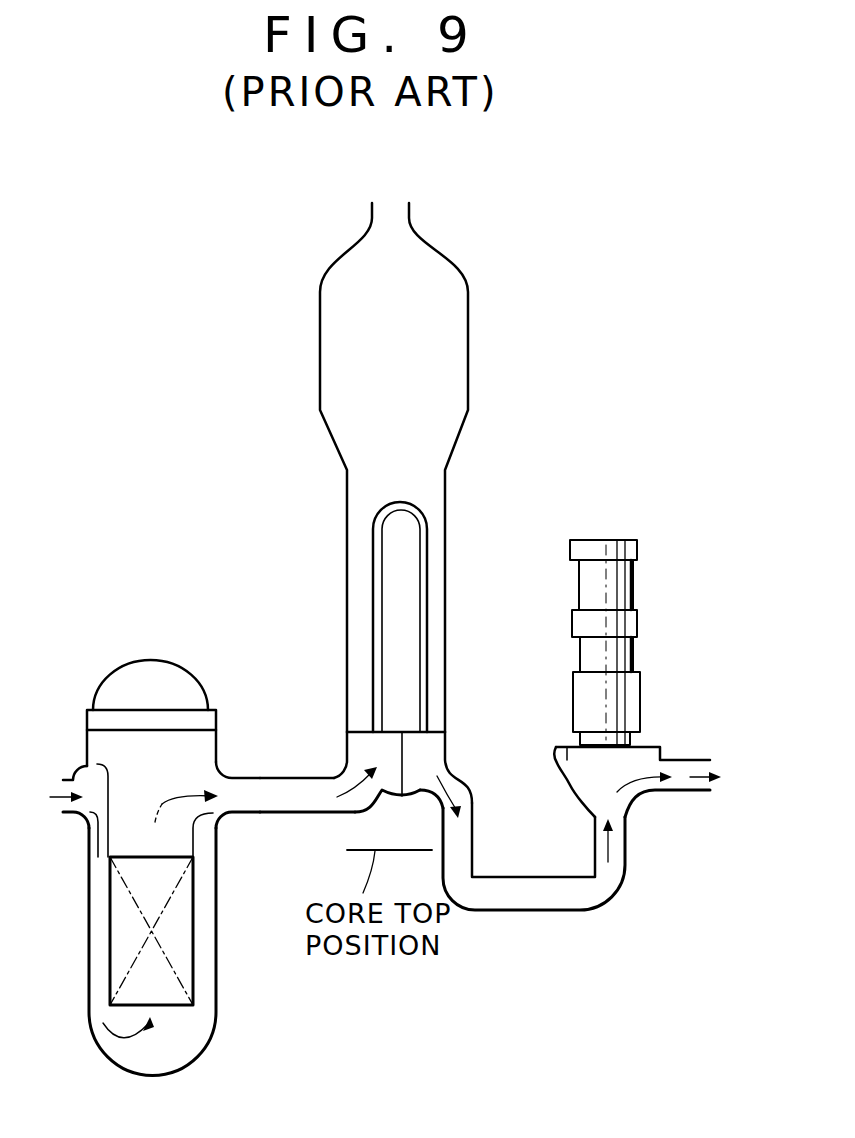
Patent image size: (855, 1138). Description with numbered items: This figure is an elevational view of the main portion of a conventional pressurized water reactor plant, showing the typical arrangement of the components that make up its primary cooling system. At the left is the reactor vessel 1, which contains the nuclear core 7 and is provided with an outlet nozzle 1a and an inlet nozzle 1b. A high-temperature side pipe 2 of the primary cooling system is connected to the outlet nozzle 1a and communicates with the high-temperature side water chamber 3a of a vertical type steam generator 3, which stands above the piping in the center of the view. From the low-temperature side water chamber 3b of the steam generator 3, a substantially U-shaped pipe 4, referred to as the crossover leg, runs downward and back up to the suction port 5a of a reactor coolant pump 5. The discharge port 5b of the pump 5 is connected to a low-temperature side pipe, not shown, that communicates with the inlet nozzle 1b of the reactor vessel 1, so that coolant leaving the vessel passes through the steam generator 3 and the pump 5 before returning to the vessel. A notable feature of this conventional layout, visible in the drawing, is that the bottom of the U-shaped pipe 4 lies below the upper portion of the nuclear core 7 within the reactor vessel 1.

The reactor vessel 1 is at (96, 682).
The outlet nozzle 1a is at (220, 775).
The inlet nozzle 1b is at (75, 778).
The high-temperature side pipe 2 is at (262, 812).
The vertical type steam generator 3 is at (410, 367).
The high-temperature side water chamber 3a is at (362, 743).
The low-temperature side water chamber 3b is at (438, 747).
The U-shaped pipe 4 is at (518, 912).
The reactor coolant pump 5 is at (567, 582).
The suction port 5a is at (590, 822).
The discharge port 5b is at (648, 745).
The nuclear core 7 is at (193, 958).